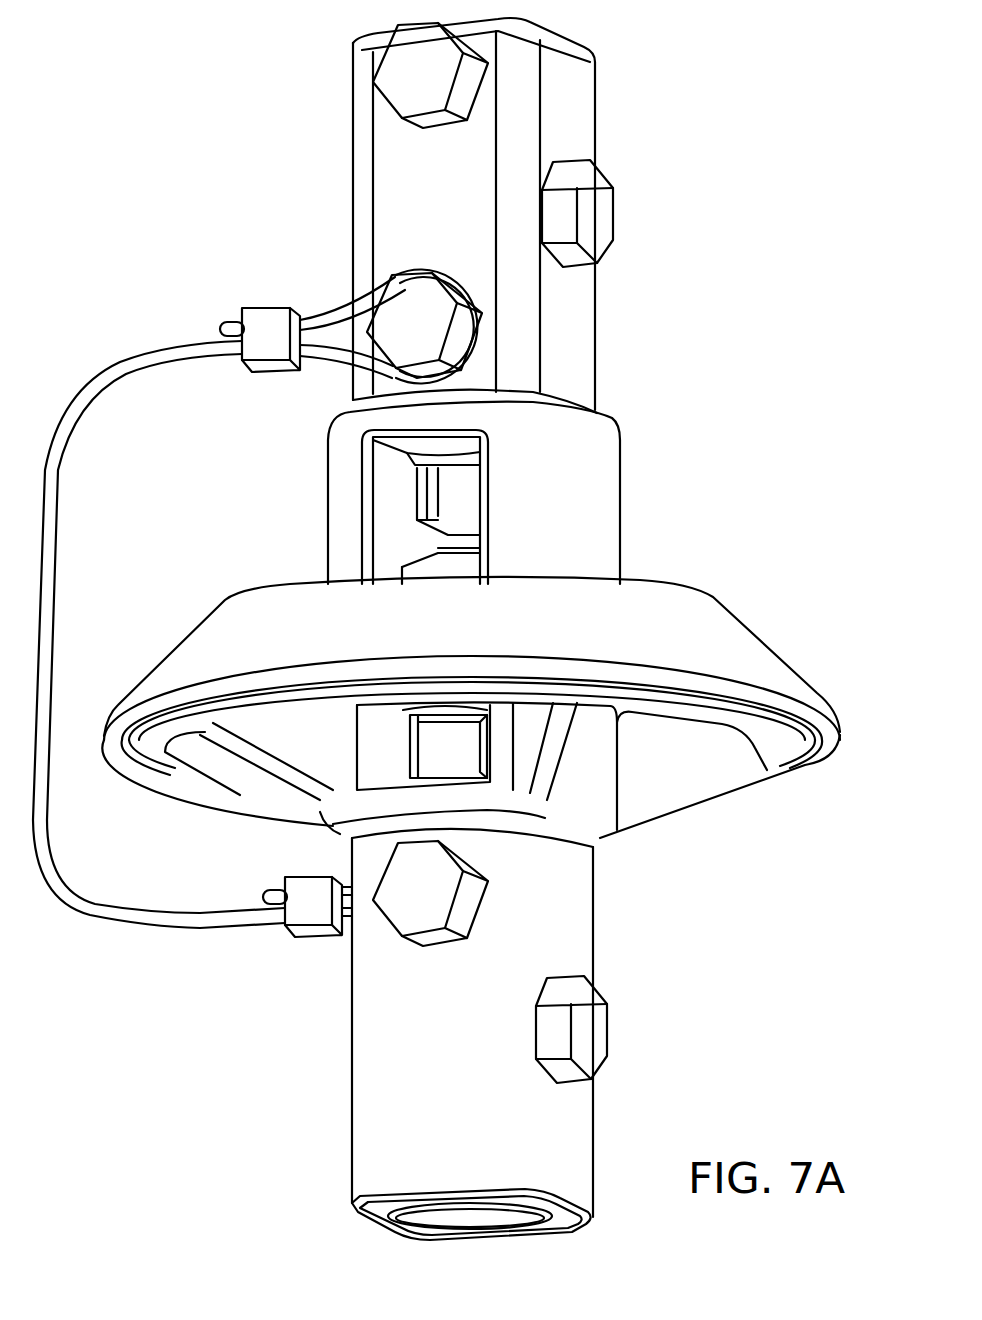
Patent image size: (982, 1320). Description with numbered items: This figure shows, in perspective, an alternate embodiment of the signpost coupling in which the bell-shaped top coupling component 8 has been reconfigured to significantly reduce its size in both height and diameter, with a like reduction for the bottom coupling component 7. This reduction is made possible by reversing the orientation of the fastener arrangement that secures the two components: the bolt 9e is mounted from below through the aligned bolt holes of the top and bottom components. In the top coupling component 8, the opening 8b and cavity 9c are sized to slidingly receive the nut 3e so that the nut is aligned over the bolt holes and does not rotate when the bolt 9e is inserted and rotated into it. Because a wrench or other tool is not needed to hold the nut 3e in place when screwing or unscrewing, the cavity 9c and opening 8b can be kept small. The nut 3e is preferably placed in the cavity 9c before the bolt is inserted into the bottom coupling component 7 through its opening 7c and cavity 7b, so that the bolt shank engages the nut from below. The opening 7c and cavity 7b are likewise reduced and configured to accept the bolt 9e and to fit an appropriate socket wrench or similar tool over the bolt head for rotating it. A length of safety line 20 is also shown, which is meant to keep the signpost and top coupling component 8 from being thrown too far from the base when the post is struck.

The safety line 20 is at (158, 346).
The top coupling component 8 is at (622, 420).
The opening 8b is at (482, 478).
The cavity 9c is at (396, 471).
The nut 3e is at (433, 565).
The bottom coupling component 7 is at (217, 761).
The cavity 7b is at (386, 723).
The opening 7c is at (353, 734).
The bolt 9e is at (452, 745).